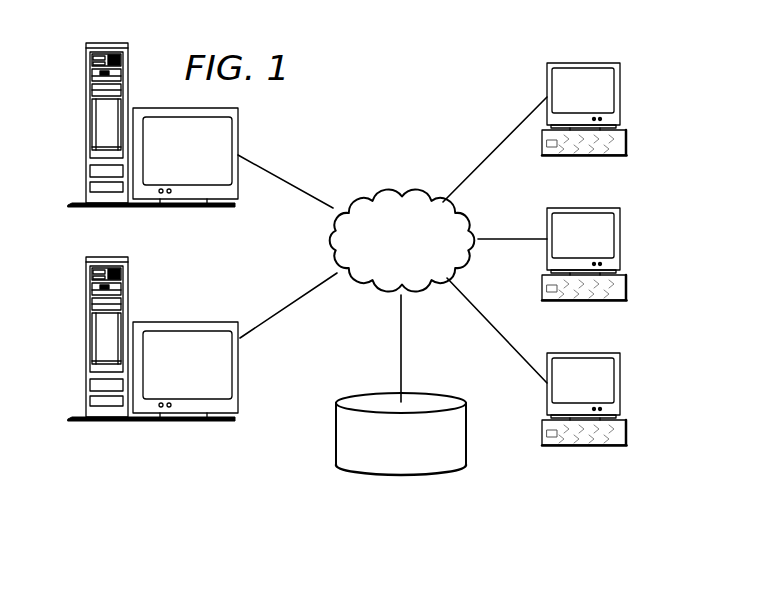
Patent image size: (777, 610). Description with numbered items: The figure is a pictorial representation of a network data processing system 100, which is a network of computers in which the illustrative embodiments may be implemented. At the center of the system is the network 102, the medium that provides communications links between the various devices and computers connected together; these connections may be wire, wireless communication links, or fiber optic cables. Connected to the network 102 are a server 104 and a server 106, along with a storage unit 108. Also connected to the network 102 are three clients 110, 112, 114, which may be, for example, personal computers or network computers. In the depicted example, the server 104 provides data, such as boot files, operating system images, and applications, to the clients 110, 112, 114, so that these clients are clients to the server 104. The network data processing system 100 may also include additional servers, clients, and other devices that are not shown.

The network data processing system 100 is at (456, 71).
The network 102 is at (372, 190).
The server 104 is at (86, 125).
The server 106 is at (86, 340).
The storage unit 108 is at (382, 477).
The client 110 is at (621, 93).
The client 112 is at (621, 240).
The client 114 is at (621, 385).